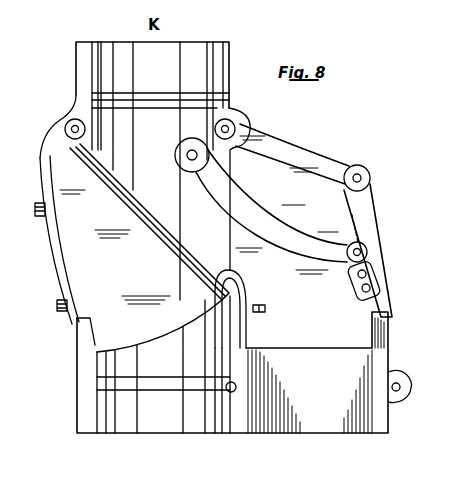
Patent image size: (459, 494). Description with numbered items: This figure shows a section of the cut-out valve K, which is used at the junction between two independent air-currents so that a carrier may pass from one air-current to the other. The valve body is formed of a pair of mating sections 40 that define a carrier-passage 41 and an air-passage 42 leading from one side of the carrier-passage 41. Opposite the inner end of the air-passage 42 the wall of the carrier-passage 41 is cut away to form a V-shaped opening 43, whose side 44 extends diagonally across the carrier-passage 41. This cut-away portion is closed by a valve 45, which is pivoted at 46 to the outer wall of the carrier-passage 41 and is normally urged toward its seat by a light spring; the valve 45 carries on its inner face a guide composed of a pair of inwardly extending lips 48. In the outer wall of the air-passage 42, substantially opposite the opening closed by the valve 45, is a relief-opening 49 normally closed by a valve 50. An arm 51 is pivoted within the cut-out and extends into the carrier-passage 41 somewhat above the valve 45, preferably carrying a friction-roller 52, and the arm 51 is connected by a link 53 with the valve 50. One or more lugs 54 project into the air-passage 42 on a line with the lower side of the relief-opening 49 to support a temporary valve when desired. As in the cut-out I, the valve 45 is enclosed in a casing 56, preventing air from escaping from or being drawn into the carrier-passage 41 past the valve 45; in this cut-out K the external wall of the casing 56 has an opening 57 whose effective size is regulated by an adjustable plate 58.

The mating sections 40 is at (76, 92).
The carrier-passage 41 is at (190, 62).
The air-passage 42 is at (316, 375).
The V-shaped opening 43 is at (141, 271).
The side of V-shaped opening 44 is at (127, 172).
The valve 45 is at (195, 272).
The pivot 46 is at (69, 126).
The lips 48 is at (172, 215).
The relief-opening 49 is at (328, 172).
The valve 50 is at (374, 247).
The arm 51 is at (237, 141).
The friction-roller 52 is at (188, 161).
The link 53 is at (293, 235).
The lugs 54 is at (260, 312).
The casing 56 is at (60, 219).
The opening 57 is at (63, 273).
The adjustable plate 58 is at (50, 239).